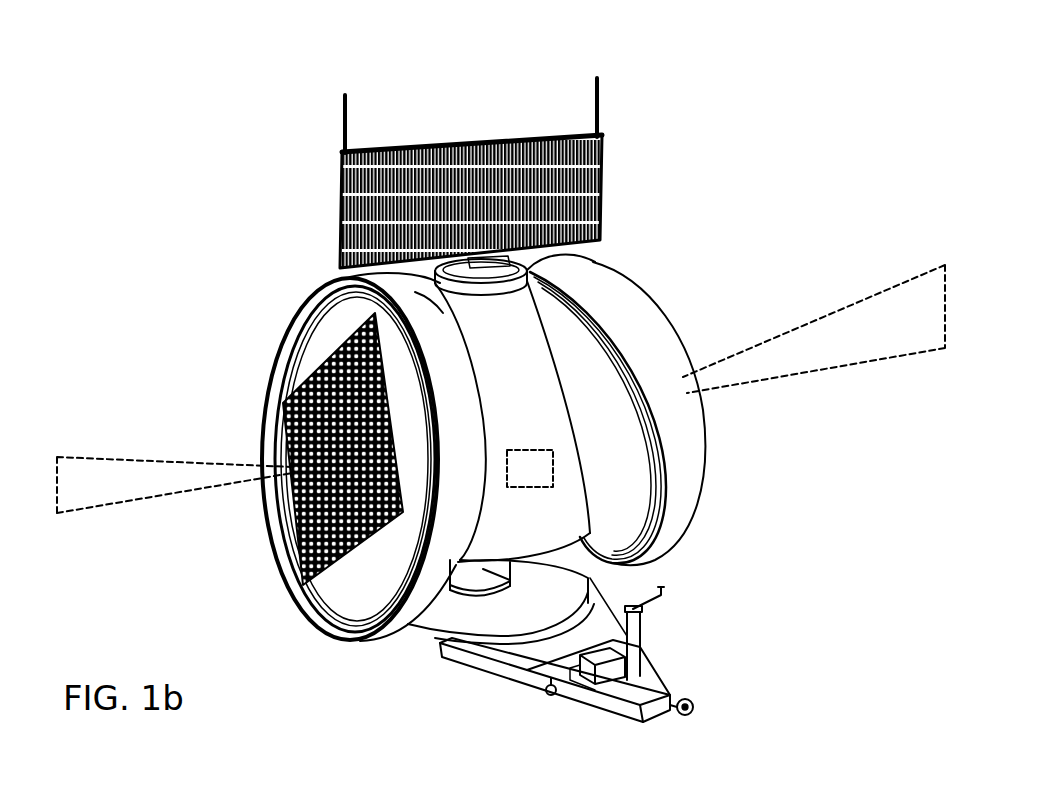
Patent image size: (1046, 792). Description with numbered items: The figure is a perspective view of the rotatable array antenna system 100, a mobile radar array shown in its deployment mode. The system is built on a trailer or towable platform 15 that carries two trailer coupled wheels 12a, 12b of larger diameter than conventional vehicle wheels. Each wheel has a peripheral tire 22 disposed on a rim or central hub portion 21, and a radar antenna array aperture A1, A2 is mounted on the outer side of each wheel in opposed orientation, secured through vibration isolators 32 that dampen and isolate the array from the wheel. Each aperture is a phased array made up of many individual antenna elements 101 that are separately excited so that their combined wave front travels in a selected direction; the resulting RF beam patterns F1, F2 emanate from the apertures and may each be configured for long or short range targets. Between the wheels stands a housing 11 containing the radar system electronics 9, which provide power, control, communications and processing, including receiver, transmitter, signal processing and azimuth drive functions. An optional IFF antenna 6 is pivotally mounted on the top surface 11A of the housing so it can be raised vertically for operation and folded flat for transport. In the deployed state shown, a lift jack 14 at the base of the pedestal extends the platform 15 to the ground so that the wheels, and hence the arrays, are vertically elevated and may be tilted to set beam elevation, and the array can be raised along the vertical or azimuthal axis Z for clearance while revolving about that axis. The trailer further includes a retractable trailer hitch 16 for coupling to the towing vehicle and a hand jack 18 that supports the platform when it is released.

The rotatable array antenna system 100 is at (706, 152).
The IFF antenna 6 is at (338, 207).
The housing 11 is at (521, 353).
The top surface of housing 11A is at (600, 262).
The radar system electronics 9 is at (530, 468).
The first trailer coupled wheel 12a is at (258, 522).
The second trailer coupled wheel 12b is at (662, 336).
The rim or central hub portion 21 is at (348, 340).
The peripheral tire 22 is at (328, 304).
The vibration isolator 32 is at (296, 606).
The antenna element 101 is at (292, 556).
The lift jack 14 is at (590, 583).
The trailer or towable platform 15 is at (450, 623).
The retractable trailer hitch 16 is at (643, 671).
The hand jack 18 is at (645, 643).
The first antenna array aperture A1 is at (285, 420).
The second antenna array aperture A2 is at (660, 289).
The first RF beam pattern F1 is at (173, 460).
The second RF beam pattern F2 is at (814, 312).
The vertical or azimuthal axis Z is at (475, 130).